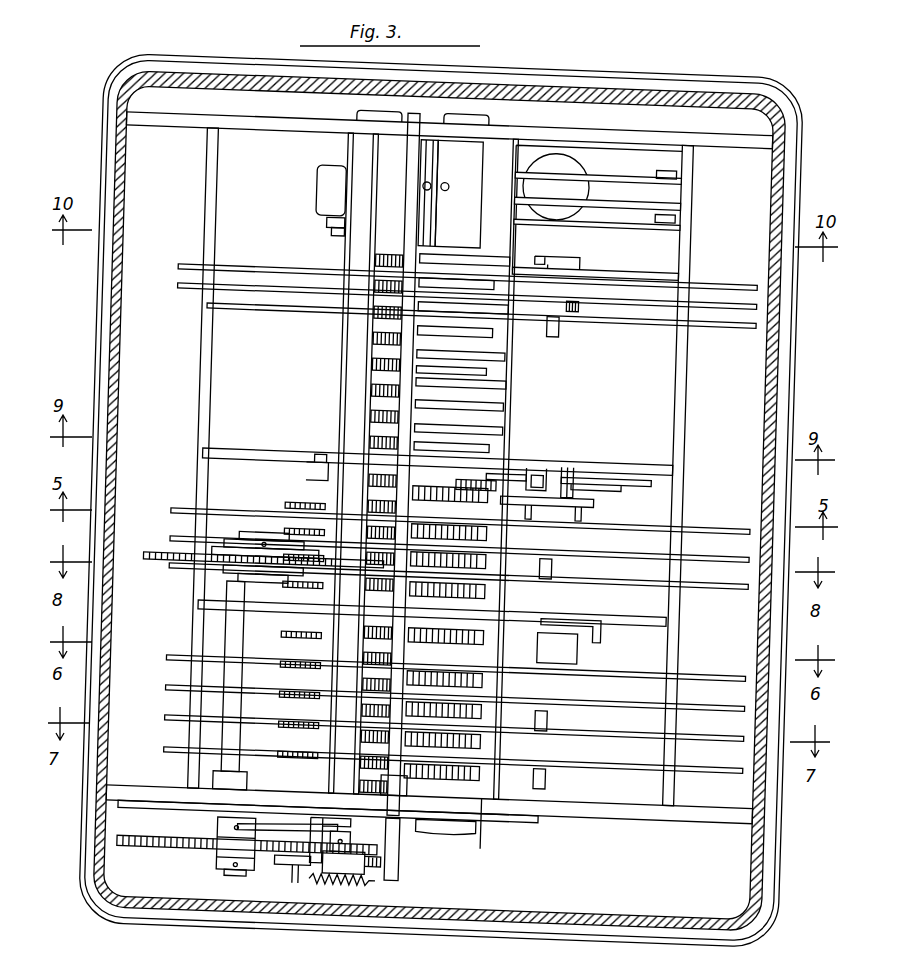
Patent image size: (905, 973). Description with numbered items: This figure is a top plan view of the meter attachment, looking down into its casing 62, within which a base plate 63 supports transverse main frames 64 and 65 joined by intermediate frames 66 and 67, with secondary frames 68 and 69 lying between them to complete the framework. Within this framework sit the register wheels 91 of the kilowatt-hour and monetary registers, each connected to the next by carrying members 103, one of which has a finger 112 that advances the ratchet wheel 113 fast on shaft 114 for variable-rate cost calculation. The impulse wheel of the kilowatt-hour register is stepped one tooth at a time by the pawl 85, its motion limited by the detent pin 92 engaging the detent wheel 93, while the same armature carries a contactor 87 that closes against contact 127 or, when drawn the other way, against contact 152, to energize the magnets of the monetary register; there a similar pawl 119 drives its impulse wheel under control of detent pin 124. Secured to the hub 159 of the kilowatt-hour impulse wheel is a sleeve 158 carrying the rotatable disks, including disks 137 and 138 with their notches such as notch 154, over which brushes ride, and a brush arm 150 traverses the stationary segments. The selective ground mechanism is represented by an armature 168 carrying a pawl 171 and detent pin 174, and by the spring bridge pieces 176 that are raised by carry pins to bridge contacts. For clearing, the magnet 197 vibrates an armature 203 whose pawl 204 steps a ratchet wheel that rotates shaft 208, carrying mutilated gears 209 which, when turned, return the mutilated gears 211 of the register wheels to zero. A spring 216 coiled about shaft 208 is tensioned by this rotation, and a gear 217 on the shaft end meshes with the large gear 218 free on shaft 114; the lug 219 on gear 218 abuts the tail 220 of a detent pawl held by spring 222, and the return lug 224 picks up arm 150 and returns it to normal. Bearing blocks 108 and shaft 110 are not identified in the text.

The casing 62 is at (571, 71).
The base plate 63 is at (331, 713).
The transverse main frame 64 is at (162, 785).
The transverse main frame 65 is at (182, 121).
The intermediate frame 66 is at (217, 376).
The intermediate frame 67 is at (697, 357).
The secondary frame 68 is at (264, 441).
The secondary frame 69 is at (661, 596).
The pawl 85 is at (603, 482).
The contactor 87 is at (586, 446).
The register wheel 91 is at (526, 770).
The detent pin 92 is at (555, 446).
The detent wheel 93 is at (562, 437).
The carrying member 103 is at (197, 283).
The bearing blocks 108 is at (565, 302).
The main shaft 110 is at (419, 193).
The finger 112 is at (365, 545).
The ratchet wheel 113 is at (182, 551).
The shaft 114 is at (249, 632).
The pawl 119 is at (560, 635).
The detent pin 124 is at (567, 612).
The contact 127 is at (617, 448).
The rotatable disk 137 is at (518, 361).
The rotatable disk 138 is at (515, 329).
The arm 150 is at (293, 813).
The contact 152 is at (532, 447).
The notch 154 is at (491, 348).
The sleeve 158 is at (492, 384).
The hub 159 is at (467, 476).
The armature 168 is at (592, 284).
The pawl 171 is at (611, 254).
The detent pin 174 is at (568, 241).
The spring bridge piece 176 is at (362, 313).
The magnet 197 is at (556, 190).
The armature 203 is at (618, 183).
The pawl 204 is at (332, 218).
The shaft 208 is at (404, 848).
The gear 209 is at (315, 489).
The gear 211 is at (494, 773).
The spring 216 is at (339, 457).
The gear 217 is at (406, 836).
The gear 218 is at (195, 839).
The lug 219 is at (348, 853).
The tail of pawl 220 is at (286, 881).
The spring 222 is at (382, 872).
The return lug 224 is at (343, 826).